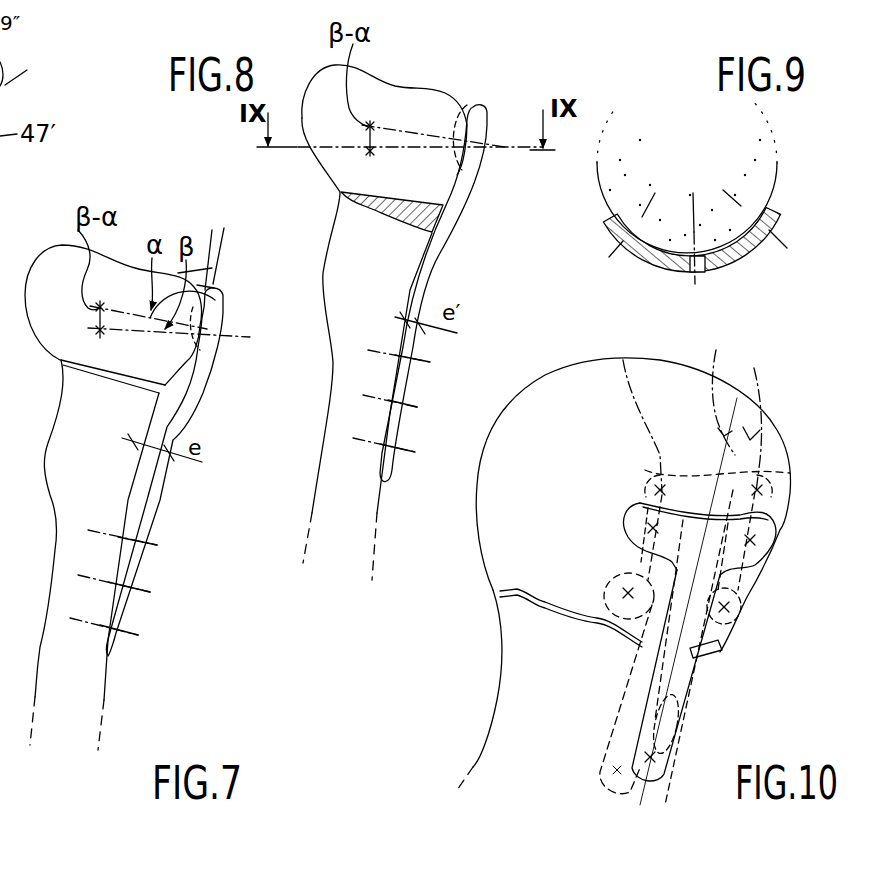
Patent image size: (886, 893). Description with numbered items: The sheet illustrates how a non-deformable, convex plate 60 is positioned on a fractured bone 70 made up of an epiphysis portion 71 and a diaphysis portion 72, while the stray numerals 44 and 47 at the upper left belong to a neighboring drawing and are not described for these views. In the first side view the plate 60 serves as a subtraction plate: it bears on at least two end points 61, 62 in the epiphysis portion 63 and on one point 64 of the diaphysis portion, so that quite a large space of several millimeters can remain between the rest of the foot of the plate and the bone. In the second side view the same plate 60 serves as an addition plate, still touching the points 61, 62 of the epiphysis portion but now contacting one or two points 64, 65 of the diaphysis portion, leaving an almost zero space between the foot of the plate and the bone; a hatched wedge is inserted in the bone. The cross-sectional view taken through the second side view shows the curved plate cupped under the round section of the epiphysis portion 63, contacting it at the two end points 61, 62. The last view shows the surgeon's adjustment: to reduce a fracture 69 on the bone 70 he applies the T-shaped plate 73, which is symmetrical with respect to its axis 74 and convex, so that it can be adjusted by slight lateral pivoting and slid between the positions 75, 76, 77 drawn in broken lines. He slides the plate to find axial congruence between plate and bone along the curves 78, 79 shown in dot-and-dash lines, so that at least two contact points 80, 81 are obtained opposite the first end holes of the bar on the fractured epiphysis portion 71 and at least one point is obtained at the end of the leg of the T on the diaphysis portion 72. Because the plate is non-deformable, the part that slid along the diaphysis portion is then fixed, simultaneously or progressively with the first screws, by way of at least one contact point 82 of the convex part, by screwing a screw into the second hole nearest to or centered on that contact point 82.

In FIG. 7, the element 44 (fragment) 44 is at (0, 172).
In FIG. 7, the element 47 (fragment) 47 is at (0, 117).
In FIG. 7, the plate 60 is at (173, 427).
In FIG. 8, the plate 60 is at (430, 277).
In FIG. 9, the end point 61 is at (630, 222).
In FIG. 9, the end point 62 is at (753, 212).
In FIG. 9, the epiphysis portion 63 is at (705, 158).
In FIG. 7, the point 64 is at (110, 627).
In FIG. 8, the point 64 is at (387, 447).
In FIG. 8, the point 65 is at (395, 397).
In FIG. 10, the fracture 69 is at (500, 600).
In FIG. 10, the bone 70 is at (818, 507).
In FIG. 10, the epiphysis portion 71 is at (673, 387).
In FIG. 10, the diaphysis portion 72 is at (495, 717).
In FIG. 10, the T-shaped plate 73 is at (715, 645).
In FIG. 10, the axis 74 is at (688, 564).
In FIG. 10, the position 75 is at (608, 608).
In FIG. 10, the position 76 is at (622, 537).
In FIG. 10, the position 77 is at (645, 470).
In FIG. 10, the curve 78 is at (623, 360).
In FIG. 10, the curve 79 is at (756, 414).
In FIG. 10, the contact point 80 is at (656, 492).
In FIG. 10, the contact point 81 is at (758, 492).
In FIG. 10, the contact point 82 is at (650, 757).